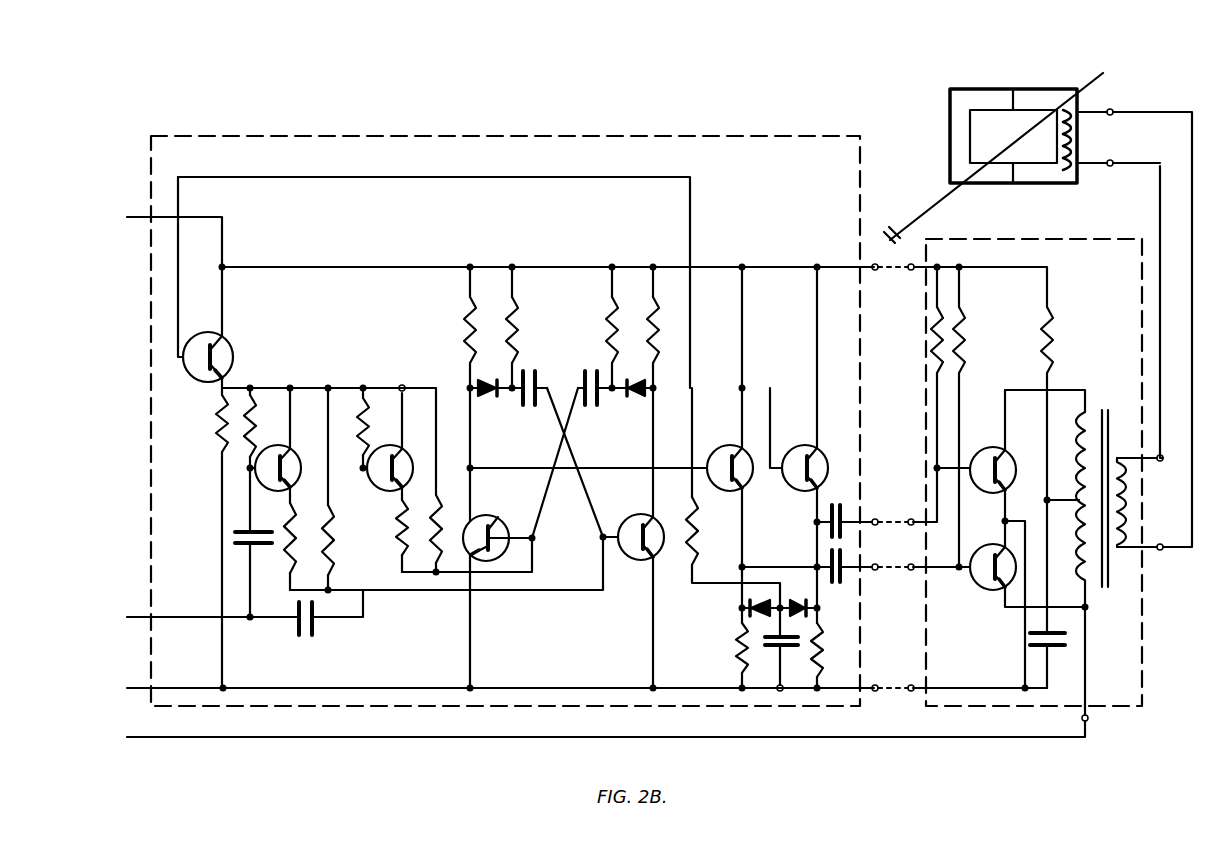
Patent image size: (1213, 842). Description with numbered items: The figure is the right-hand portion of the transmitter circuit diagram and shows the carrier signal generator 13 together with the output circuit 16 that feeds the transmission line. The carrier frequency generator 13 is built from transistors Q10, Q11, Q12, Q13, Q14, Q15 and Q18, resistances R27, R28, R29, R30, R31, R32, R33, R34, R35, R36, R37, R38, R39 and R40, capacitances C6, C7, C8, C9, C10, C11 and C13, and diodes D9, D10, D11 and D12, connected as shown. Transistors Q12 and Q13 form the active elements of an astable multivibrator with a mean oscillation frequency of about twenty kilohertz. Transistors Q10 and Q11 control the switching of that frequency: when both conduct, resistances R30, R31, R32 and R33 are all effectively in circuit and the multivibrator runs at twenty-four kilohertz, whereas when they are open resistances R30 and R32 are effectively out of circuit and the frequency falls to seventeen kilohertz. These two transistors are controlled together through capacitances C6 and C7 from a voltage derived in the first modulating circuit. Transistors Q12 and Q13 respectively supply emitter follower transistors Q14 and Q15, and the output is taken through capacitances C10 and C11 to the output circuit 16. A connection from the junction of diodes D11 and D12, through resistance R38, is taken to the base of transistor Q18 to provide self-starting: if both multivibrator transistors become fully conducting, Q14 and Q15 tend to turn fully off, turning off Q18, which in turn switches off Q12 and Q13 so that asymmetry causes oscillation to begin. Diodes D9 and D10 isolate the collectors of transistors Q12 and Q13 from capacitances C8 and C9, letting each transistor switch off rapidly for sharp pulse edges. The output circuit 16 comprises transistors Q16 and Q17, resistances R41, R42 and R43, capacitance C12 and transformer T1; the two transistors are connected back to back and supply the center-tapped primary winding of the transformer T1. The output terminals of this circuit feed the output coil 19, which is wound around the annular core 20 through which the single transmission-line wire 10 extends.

The carrier signal generator 13 is at (483, 135).
The output circuit 16 is at (1092, 238).
The annular core 20 is at (955, 123).
The output coil 19 is at (1082, 123).
The single wire 10 is at (937, 203).
The transformer T1 is at (1102, 408).
The transistor Q10 is at (253, 477).
The transistor Q11 is at (413, 463).
The transistor Q12 is at (507, 547).
The transistor Q13 is at (623, 556).
The emitter follower transistor Q14 is at (722, 448).
The emitter follower transistor Q15 is at (795, 447).
The transistor Q16 is at (985, 452).
The transistor Q17 is at (977, 583).
The transistor Q18 is at (224, 346).
The resistance R27 is at (218, 408).
The resistance R28 is at (240, 452).
The resistance R29 is at (358, 398).
The resistance R30 is at (286, 527).
The resistance R31 is at (338, 560).
The resistance R32 is at (395, 565).
The resistance R33 is at (440, 552).
The resistance R34 is at (465, 307).
The resistance R35 is at (512, 305).
The resistance R36 is at (610, 305).
The resistance R37 is at (652, 305).
The resistance R38 is at (687, 513).
The resistance R39 is at (740, 630).
The resistance R40 is at (818, 622).
The resistance R41 is at (907, 327).
The resistance R42 is at (960, 308).
The resistance R43 is at (1047, 308).
The capacitance C6 is at (233, 533).
The capacitance C7 is at (295, 622).
The capacitance C8 is at (517, 397).
The capacitance C9 is at (587, 377).
The capacitance C10 is at (847, 510).
The capacitance C11 is at (847, 560).
The capacitance C12 is at (1027, 640).
The capacitance C13 is at (792, 650).
The diode D9 is at (480, 383).
The diode D10 is at (637, 398).
The diode D11 is at (763, 602).
The diode D12 is at (797, 600).